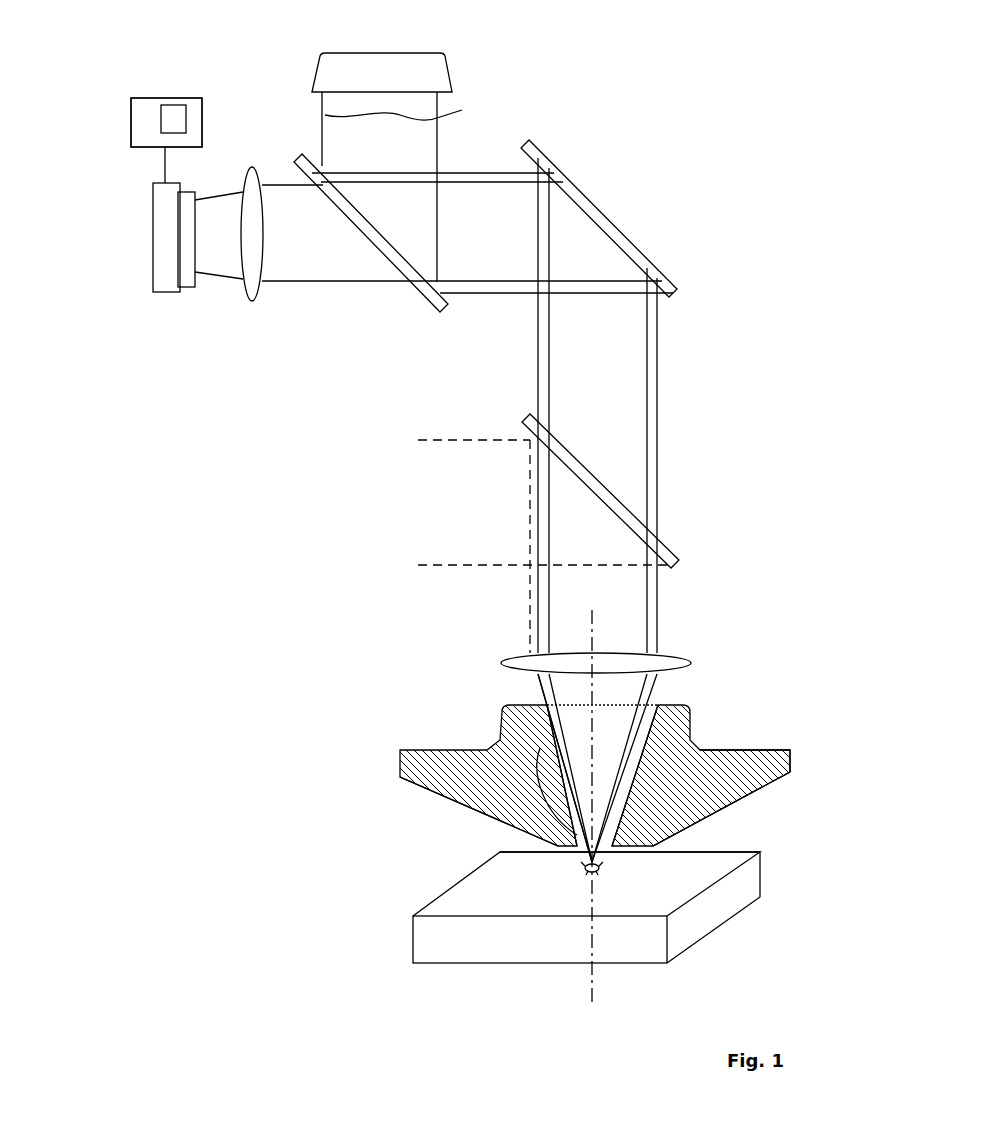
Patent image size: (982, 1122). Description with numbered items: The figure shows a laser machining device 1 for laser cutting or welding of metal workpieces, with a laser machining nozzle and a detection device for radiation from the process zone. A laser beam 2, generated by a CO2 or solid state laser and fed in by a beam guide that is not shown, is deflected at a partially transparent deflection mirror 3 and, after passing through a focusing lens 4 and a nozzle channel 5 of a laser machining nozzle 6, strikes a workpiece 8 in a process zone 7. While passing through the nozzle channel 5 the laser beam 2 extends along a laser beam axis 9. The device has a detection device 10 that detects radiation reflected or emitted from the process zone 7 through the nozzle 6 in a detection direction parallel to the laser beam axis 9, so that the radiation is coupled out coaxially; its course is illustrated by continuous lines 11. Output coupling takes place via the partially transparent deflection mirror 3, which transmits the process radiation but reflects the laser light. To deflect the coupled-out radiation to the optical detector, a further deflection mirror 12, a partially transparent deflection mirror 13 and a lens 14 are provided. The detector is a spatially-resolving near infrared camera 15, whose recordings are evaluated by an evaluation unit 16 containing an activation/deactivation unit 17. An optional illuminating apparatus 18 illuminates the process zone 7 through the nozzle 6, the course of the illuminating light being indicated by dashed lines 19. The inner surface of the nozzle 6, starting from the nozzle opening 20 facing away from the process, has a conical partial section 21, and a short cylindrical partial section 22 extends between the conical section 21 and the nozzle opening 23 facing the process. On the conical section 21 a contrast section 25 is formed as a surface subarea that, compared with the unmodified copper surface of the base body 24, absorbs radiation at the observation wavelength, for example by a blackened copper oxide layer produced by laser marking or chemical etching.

The laser machining device 1 is at (705, 157).
The laser beam 2 is at (470, 440).
The partially transparent deflection mirror 3 is at (667, 543).
The focusing lens 4 is at (678, 653).
The nozzle channel 5 is at (575, 712).
The laser machining nozzle 6 is at (708, 727).
The process zone 7 is at (600, 872).
The workpiece 8 is at (545, 951).
The laser beam axis 9 is at (598, 990).
The detection device 10 is at (265, 371).
The continuous lines 11 is at (549, 383).
The further deflection mirror 12 is at (665, 286).
The partially transparent deflection mirror 13 is at (433, 311).
The lens 14 is at (250, 300).
The near infrared camera 15 is at (155, 288).
The evaluation unit 16 is at (146, 98).
The activation/deactivation unit 17 is at (176, 105).
The illuminating apparatus 18 is at (397, 52).
The dashed lines 19 is at (440, 143).
The nozzle opening facing away from the process 20 is at (660, 692).
The conical partial section 21 is at (567, 770).
The cylindrical partial section 22 is at (650, 845).
The nozzle opening facing the process 23 is at (577, 866).
The base body 24 is at (760, 750).
The contrast section 25 is at (630, 790).